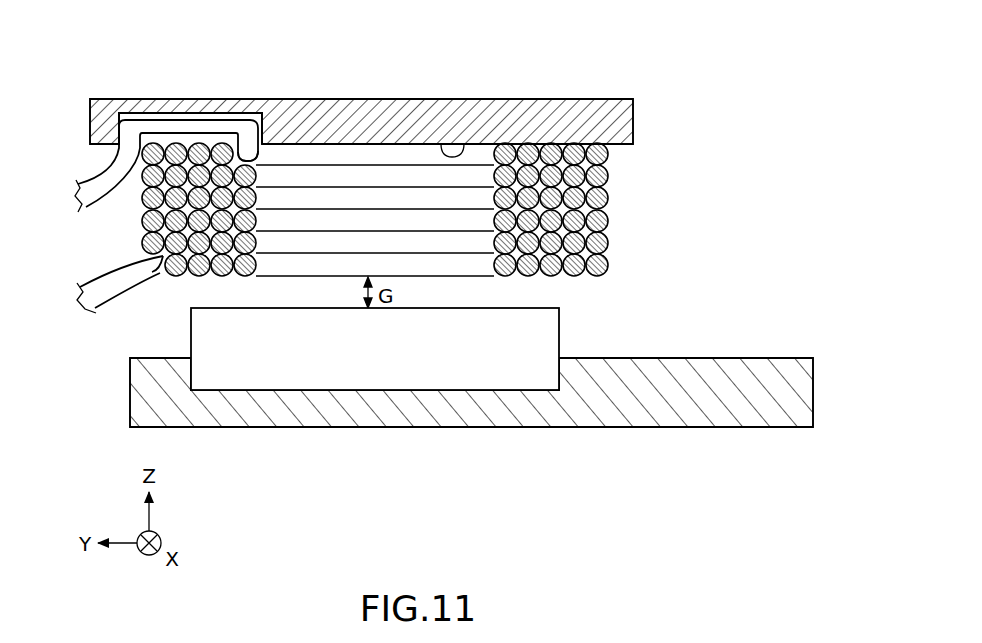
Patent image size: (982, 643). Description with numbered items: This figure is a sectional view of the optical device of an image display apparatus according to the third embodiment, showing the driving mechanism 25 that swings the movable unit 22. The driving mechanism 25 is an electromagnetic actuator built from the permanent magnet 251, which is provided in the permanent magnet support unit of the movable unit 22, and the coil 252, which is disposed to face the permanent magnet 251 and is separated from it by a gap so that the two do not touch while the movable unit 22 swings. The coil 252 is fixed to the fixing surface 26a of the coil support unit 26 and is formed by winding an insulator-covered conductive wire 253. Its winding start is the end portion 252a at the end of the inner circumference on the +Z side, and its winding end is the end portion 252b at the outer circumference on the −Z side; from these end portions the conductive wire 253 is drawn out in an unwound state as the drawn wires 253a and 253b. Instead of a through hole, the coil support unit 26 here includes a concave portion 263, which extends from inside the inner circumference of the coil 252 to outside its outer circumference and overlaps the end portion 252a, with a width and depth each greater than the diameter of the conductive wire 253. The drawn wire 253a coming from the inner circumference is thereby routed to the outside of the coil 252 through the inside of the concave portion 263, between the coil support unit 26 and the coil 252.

The coil support unit 26 is at (535, 120).
The concave portion 263 is at (192, 109).
The fixing surface 26a is at (451, 153).
The driving mechanism 25 is at (379, 207).
The conductive wire 253 is at (356, 152).
The coil 252 is at (608, 195).
The end portion 252a is at (250, 150).
The end portion 252b is at (157, 257).
The drawn wire 253a is at (140, 132).
The drawn wire 253b is at (95, 302).
The permanent magnet 251 is at (403, 368).
The movable unit 22 is at (692, 403).